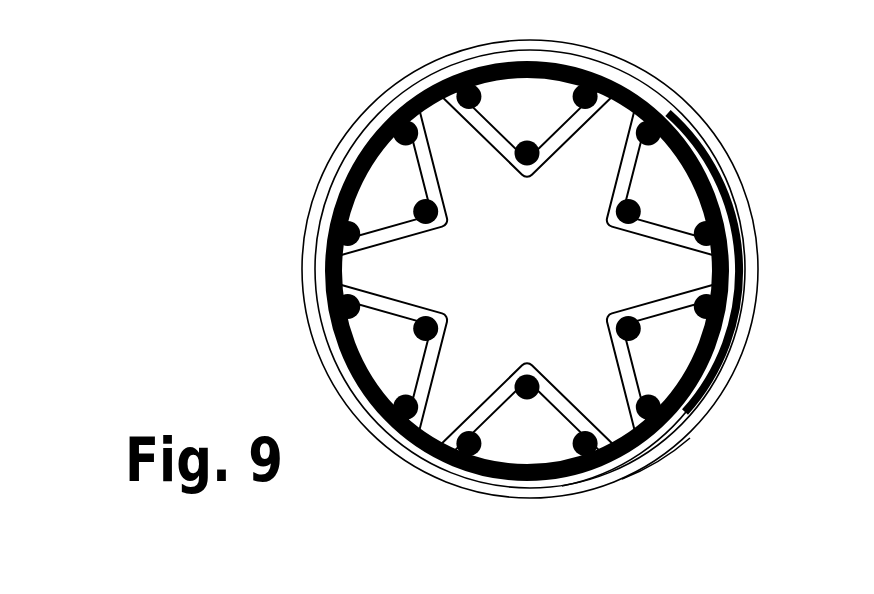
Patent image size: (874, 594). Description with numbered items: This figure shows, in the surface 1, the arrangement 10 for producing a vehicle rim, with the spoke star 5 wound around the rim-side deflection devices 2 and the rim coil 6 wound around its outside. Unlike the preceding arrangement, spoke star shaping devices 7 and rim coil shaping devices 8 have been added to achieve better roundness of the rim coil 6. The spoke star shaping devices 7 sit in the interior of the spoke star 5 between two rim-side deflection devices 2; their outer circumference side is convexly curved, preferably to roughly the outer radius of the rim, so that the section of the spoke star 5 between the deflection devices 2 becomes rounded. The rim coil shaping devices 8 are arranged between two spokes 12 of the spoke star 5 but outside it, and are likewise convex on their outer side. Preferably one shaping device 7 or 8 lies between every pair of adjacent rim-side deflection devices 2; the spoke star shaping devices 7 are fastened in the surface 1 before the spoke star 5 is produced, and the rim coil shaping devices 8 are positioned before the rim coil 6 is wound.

The surface 1 is at (92, 168).
The arrangement 10 is at (278, 259).
The spoke star 5 is at (693, 186).
The rim-side deflection devices 2 is at (667, 210).
The spokes 12 is at (512, 430).
The rim coil 6 is at (727, 378).
The spoke star shaping devices 7 is at (640, 463).
The rim coil shaping devices 8 is at (703, 398).